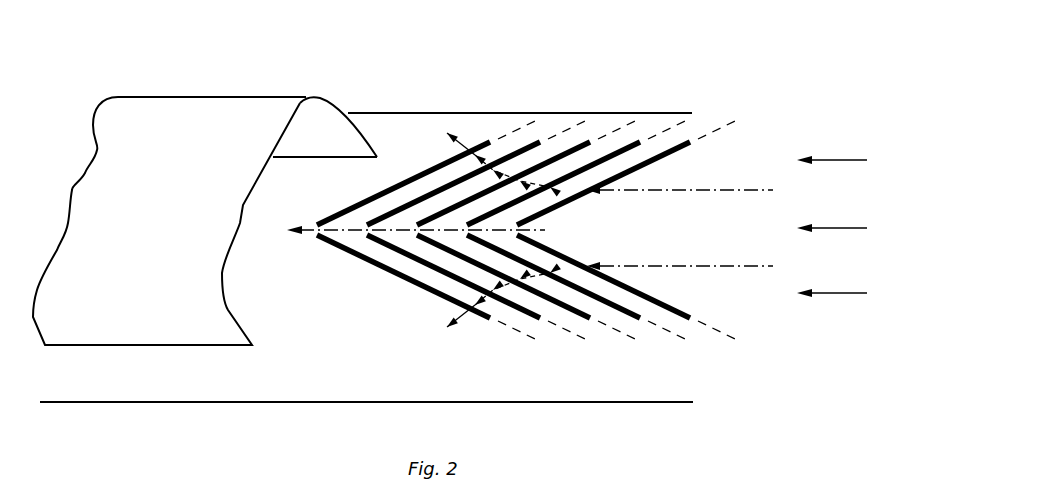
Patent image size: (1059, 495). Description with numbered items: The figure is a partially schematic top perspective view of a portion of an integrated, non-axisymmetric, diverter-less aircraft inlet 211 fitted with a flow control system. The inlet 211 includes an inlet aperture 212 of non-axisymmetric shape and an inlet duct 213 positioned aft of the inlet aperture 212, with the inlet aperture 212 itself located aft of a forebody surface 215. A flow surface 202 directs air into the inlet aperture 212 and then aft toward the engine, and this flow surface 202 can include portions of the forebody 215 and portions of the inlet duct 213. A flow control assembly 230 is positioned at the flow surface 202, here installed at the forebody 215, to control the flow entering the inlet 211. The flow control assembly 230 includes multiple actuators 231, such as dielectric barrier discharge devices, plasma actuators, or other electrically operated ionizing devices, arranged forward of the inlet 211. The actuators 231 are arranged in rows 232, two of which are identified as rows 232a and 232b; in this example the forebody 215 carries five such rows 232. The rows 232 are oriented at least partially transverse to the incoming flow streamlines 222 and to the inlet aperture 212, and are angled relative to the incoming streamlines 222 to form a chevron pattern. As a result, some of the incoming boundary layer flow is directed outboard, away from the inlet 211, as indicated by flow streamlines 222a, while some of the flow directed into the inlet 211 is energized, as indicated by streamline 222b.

The flow surface 202 is at (350, 137).
The inlet 211 is at (137, 328).
The inlet aperture 212 is at (340, 103).
The inlet duct 213 is at (313, 120).
The forebody surface 215 is at (648, 113).
The incoming flow streamlines 222 is at (848, 160).
The flow streamlines 222a is at (685, 190).
The streamline 222b is at (555, 238).
The flow control assembly 230 is at (510, 128).
The actuators 231 is at (577, 195).
The rows 232 is at (592, 130).
The row 232a is at (722, 125).
The row 232b is at (672, 125).